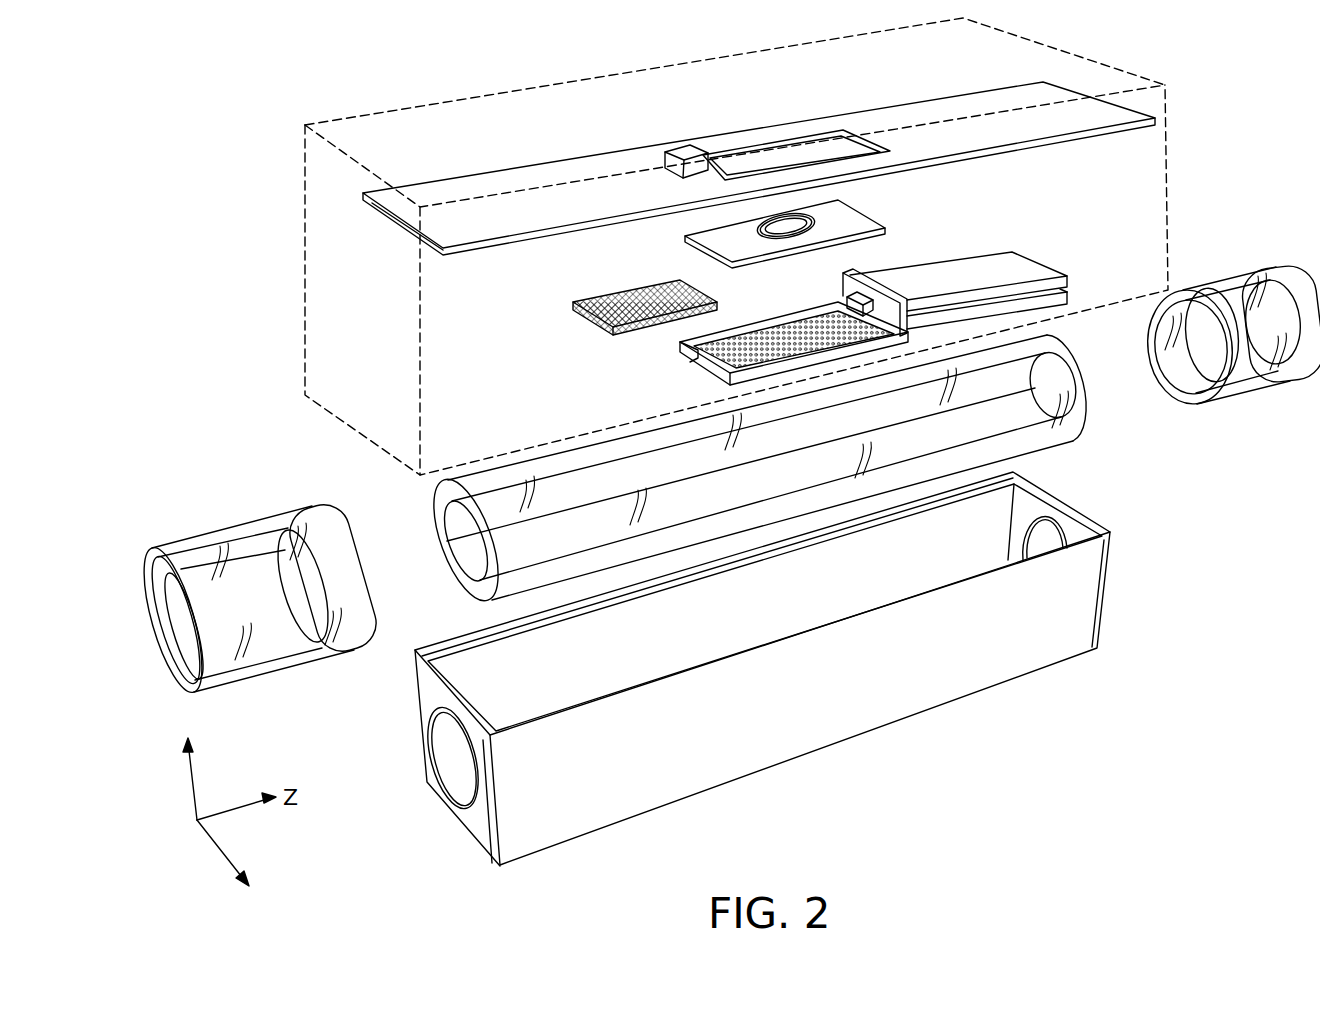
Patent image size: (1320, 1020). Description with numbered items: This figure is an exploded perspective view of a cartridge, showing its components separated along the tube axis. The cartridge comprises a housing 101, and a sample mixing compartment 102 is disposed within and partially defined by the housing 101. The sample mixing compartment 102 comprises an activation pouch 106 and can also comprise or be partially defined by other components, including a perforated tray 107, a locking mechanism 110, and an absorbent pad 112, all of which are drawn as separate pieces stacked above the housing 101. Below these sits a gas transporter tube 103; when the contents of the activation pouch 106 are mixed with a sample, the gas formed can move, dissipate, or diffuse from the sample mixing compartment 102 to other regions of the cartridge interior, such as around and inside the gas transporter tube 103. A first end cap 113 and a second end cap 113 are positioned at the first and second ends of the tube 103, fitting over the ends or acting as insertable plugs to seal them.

The housing 101 is at (586, 170).
The sample mixing compartment 102 is at (345, 118).
The gas transporter tube 103 is at (1012, 417).
The activation pouch 106 is at (600, 296).
The perforated tray 107 is at (762, 325).
The locking mechanism 110 is at (858, 298).
The absorbent pad 112 is at (845, 212).
The end cap 113 is at (218, 528).